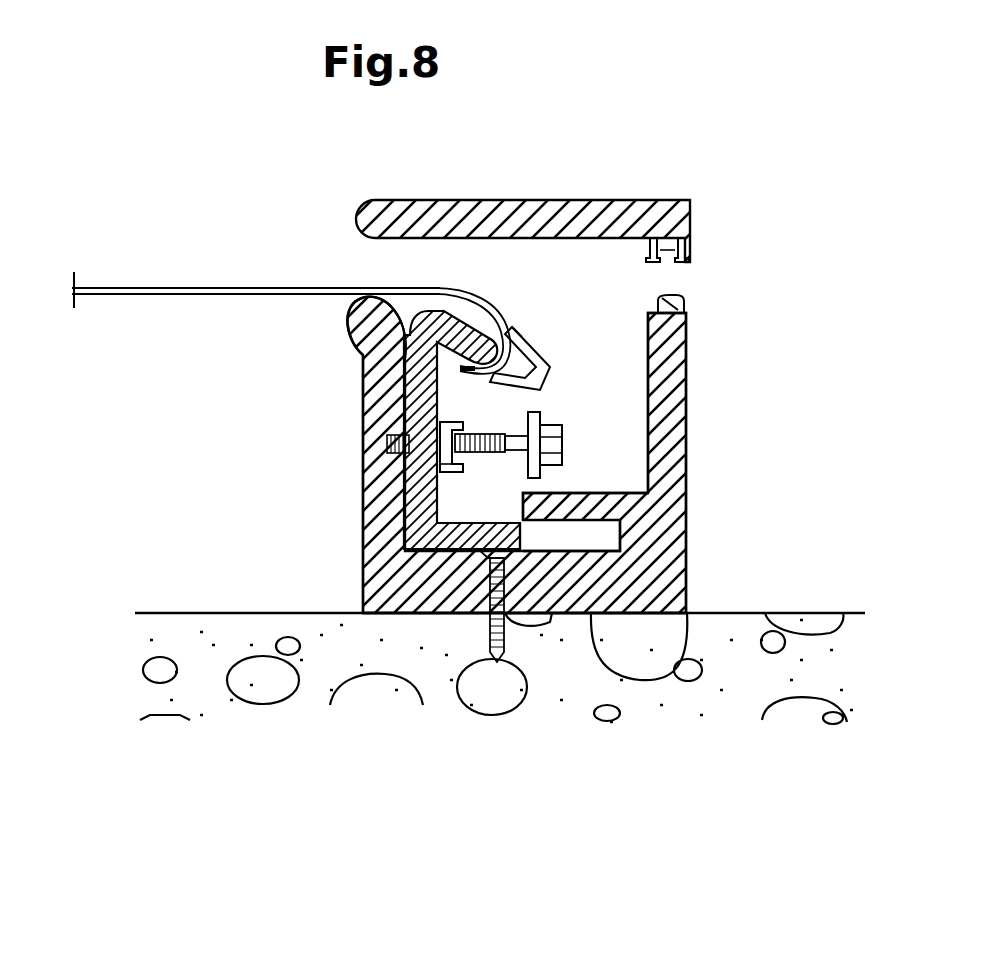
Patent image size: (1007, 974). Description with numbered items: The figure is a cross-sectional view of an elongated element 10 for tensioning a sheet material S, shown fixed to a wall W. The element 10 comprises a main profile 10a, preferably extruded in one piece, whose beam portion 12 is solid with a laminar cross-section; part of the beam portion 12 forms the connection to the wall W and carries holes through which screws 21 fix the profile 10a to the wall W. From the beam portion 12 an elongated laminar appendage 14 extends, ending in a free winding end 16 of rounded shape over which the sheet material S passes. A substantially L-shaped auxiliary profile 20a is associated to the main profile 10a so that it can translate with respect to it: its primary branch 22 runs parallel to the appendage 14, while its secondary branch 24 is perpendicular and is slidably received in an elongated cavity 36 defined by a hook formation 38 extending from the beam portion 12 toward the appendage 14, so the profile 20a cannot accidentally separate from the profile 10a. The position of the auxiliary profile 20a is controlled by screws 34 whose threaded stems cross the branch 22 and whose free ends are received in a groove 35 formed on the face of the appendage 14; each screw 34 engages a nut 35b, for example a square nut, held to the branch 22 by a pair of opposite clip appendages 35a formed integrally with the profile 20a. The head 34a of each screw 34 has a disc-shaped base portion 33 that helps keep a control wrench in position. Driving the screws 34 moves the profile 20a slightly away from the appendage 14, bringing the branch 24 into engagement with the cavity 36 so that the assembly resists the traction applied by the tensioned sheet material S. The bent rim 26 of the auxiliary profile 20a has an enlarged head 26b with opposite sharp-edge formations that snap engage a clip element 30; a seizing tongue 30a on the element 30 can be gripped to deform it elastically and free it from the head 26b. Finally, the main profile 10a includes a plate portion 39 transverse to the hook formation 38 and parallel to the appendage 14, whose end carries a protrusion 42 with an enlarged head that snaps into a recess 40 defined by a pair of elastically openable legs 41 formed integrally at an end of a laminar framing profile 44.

The sheet material S is at (153, 290).
The wall W is at (162, 645).
The elongated element 10 is at (447, 487).
The main profile 10a is at (687, 578).
The beam portion 12 is at (362, 610).
The elongated laminar appendage 14 is at (371, 425).
The free winding end 16 is at (362, 303).
The auxiliary profile 20a is at (432, 310).
The screw 21 is at (488, 648).
The primary branch 22 is at (437, 489).
The secondary branch 24 is at (462, 545).
The bent rim 26 is at (468, 344).
The enlarged head 26b is at (406, 357).
The clip element 30 is at (560, 349).
The seizing tongue 30a is at (522, 328).
The disc-shaped base portion 33 is at (545, 414).
The screw 34 is at (496, 453).
The head 34a is at (564, 440).
The groove 35 is at (385, 456).
The clip appendages 35a is at (400, 392).
The nut 35b is at (398, 487).
The elongated cavity 36 is at (588, 535).
The hook formation 38 is at (558, 510).
The plate portion 39 is at (682, 440).
The recess 40 is at (664, 249).
The elastic legs 41 is at (657, 250).
The protrusion 42 is at (678, 297).
The laminar framing profile 44 is at (567, 212).